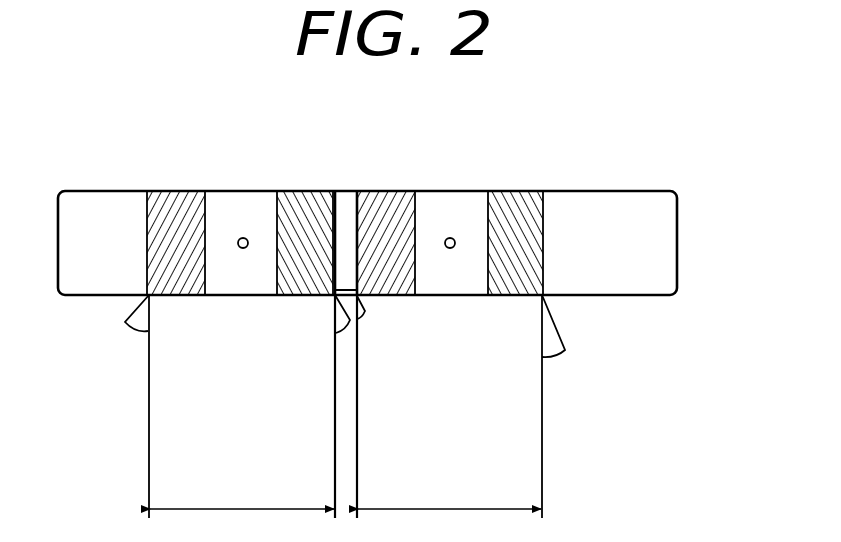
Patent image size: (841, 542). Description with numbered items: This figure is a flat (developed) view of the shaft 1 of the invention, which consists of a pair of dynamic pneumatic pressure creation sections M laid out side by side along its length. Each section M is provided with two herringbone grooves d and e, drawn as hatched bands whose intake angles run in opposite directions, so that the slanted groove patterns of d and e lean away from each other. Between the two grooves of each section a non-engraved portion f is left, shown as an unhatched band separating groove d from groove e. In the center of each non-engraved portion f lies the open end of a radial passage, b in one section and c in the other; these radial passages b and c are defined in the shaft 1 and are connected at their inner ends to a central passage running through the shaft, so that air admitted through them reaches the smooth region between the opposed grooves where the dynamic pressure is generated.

The shaft 1 is at (613, 200).
The herringbone groove d is at (176, 191).
The herringbone groove e is at (300, 191).
The non-engraved portion f is at (236, 191).
The radial passage b is at (243, 248).
The radial passage c is at (450, 248).
The dynamic pneumatic pressure creation section M is at (167, 468).